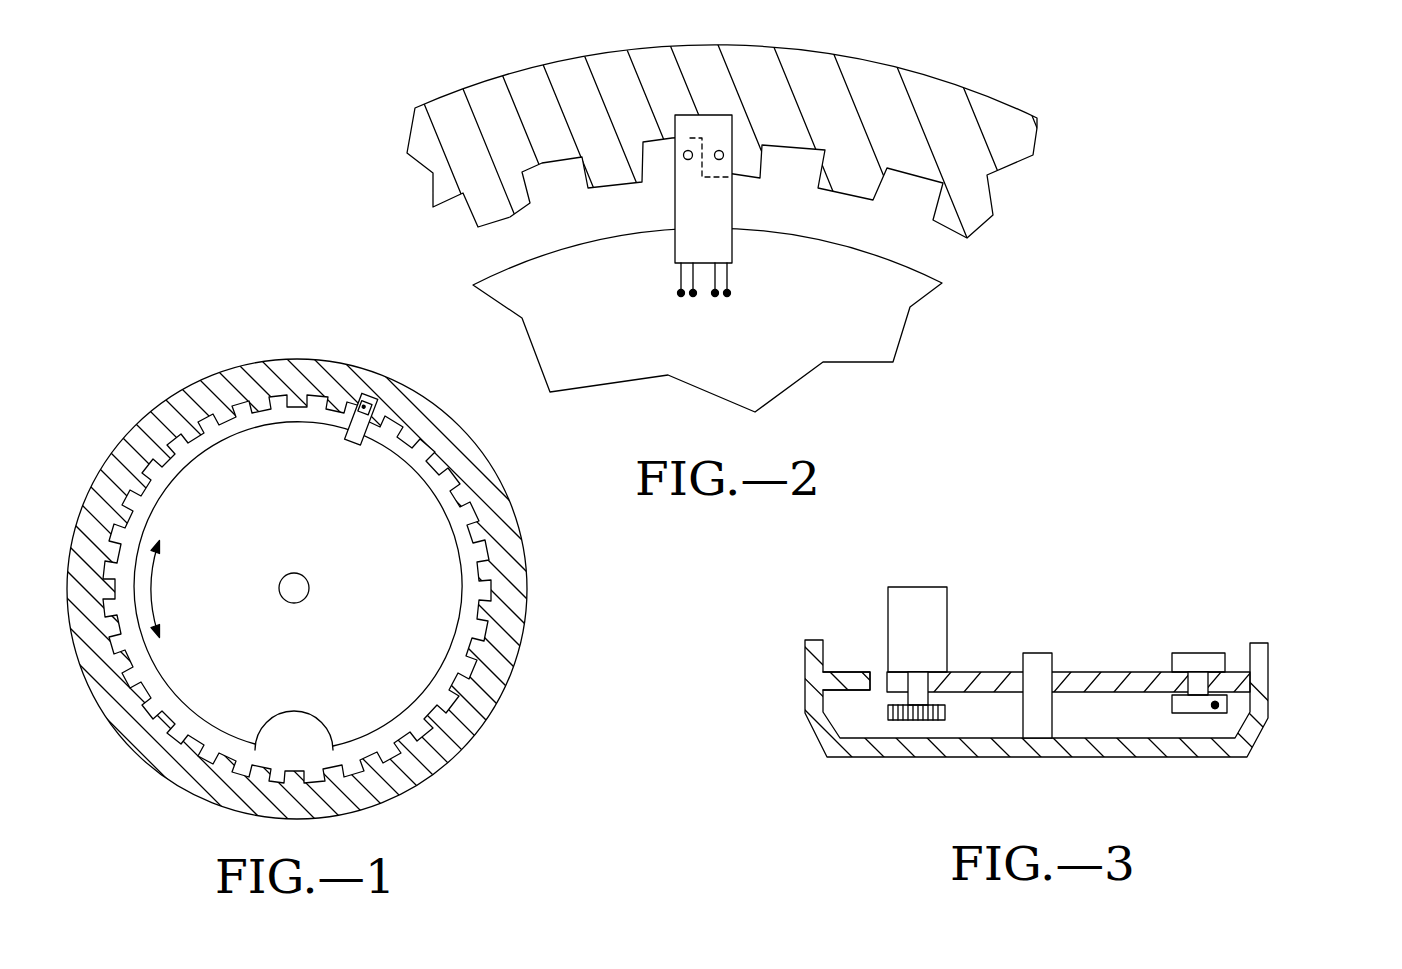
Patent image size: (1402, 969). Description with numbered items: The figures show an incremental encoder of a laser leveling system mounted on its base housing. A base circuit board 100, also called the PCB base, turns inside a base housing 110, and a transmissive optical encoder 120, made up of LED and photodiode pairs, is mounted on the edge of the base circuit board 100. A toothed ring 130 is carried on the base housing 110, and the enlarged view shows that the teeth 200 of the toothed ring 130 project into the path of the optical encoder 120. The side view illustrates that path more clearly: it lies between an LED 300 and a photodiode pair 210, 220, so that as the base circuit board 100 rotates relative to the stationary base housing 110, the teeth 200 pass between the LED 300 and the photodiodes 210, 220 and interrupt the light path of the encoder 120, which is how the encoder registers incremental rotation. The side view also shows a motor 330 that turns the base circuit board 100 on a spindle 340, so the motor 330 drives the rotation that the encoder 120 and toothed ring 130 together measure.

In FIG. 1, the base circuit board 100 is at (222, 717).
In FIG. 2, the base circuit board 100 is at (838, 342).
In FIG. 3, the base circuit board 100 is at (1097, 672).
In FIG. 1, the base housing 110 is at (485, 697).
In FIG. 3, the base housing 110 is at (905, 755).
In FIG. 1, the transmissive optical encoder 120 is at (370, 417).
In FIG. 2, the transmissive optical encoder 120 is at (723, 203).
In FIG. 3, the transmissive optical encoder 120 is at (1199, 710).
In FIG. 1, the toothed ring 130 is at (355, 779).
In FIG. 2, the toothed ring 130 is at (913, 172).
In FIG. 3, the toothed ring 130 is at (853, 672).
In FIG. 2, the teeth 200 is at (682, 157).
In FIG. 2, the photodiode 210 is at (686, 151).
In FIG. 3, the photodiode 210 is at (1216, 706).
In FIG. 2, the photodiode 220 is at (722, 151).
In FIG. 3, the photodiode 220 is at (1215, 705).
In FIG. 3, the LED 300 is at (1249, 681).
In FIG. 3, the motor 330 is at (922, 587).
In FIG. 3, the spindle 340 is at (1037, 653).